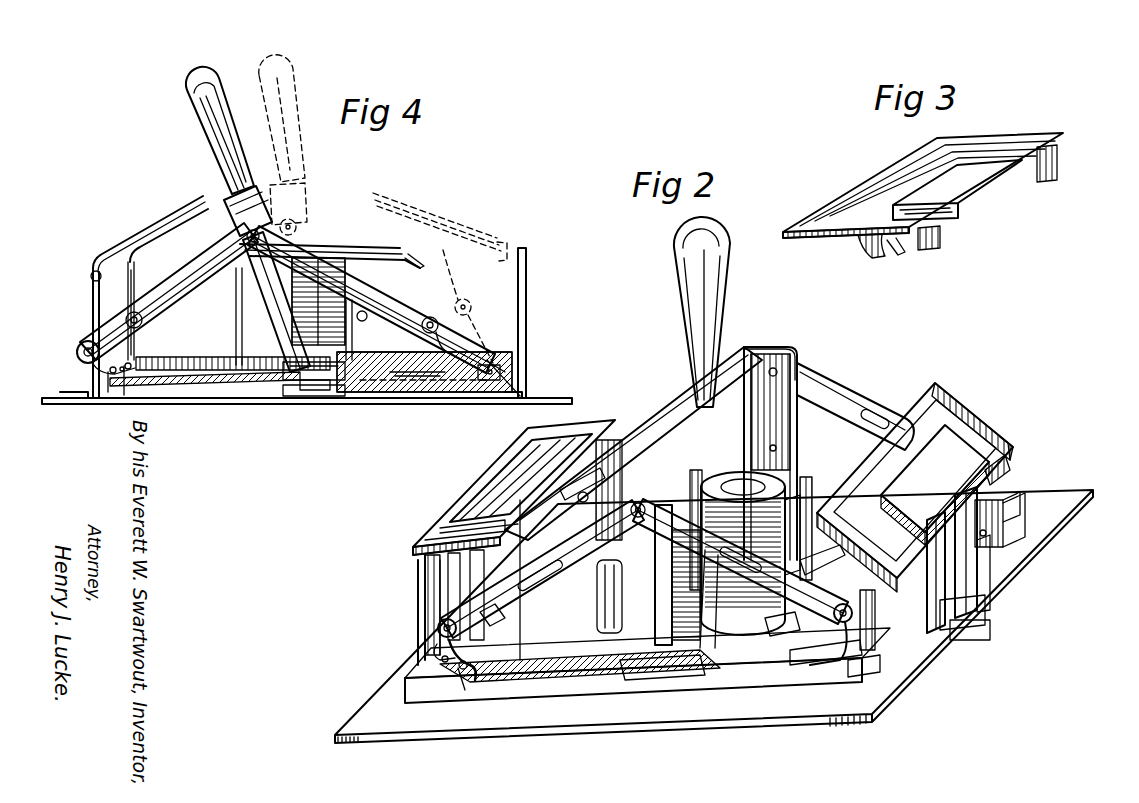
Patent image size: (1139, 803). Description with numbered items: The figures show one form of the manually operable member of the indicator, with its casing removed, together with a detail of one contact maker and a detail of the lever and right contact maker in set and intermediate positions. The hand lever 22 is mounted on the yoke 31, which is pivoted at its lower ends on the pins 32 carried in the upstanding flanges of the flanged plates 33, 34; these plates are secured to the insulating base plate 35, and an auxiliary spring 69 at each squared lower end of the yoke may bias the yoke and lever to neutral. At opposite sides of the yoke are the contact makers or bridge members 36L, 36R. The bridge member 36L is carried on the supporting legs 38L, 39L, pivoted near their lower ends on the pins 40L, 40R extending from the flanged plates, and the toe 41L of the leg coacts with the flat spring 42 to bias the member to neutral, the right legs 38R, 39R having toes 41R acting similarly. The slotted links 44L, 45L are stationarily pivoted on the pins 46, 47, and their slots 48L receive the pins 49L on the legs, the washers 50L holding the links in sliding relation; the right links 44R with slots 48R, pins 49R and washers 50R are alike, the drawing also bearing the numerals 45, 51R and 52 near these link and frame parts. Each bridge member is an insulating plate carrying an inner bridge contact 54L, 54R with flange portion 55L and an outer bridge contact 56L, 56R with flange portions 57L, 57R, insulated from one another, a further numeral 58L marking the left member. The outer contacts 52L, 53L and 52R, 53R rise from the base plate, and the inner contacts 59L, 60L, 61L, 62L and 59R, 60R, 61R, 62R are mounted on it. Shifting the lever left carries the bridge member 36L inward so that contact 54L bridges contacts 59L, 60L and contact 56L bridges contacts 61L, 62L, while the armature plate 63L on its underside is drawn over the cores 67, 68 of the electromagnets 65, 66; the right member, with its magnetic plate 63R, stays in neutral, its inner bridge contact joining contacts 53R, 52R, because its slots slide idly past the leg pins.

In FIG. 4, the hand lever 22 is at (198, 108).
In FIG. 2, the hand lever 22 is at (713, 262).
In FIG. 4, the yoke 31 is at (232, 200).
In FIG. 2, the yoke 31 is at (790, 372).
In FIG. 4, the pins 32 is at (290, 385).
In FIG. 2, the pins 32 is at (600, 684).
In FIG. 4, the flanged plate 33 is at (400, 376).
In FIG. 2, the flanged plate 33 is at (795, 662).
In FIG. 2, the flanged plate 34 is at (1010, 500).
In FIG. 4, the insulating base plate 35 is at (558, 398).
In FIG. 2, the insulating base plate 35 is at (880, 698).
In FIG. 4, the right contact maker or bridge member 36R is at (180, 210).
In FIG. 2, the right contact maker or bridge member 36R is at (440, 520).
In FIG. 4, the left contact maker or bridge member 36L is at (292, 250).
In FIG. 3, the left contact maker or bridge member 36L is at (1062, 138).
In FIG. 2, the left contact maker or bridge member 36L is at (990, 430).
In FIG. 4, the right supporting leg 38R is at (134, 272).
In FIG. 2, the right supporting leg 38R is at (435, 615).
In FIG. 4, the left supporting leg 38L is at (470, 266).
In FIG. 3, the left supporting leg 38L is at (870, 258).
In FIG. 2, the left supporting leg 38L is at (868, 612).
In FIG. 2, the right supporting leg 39R is at (575, 488).
In FIG. 2, the left supporting leg 39L is at (1003, 500).
In FIG. 4, the pin 40R is at (115, 375).
In FIG. 2, the pin 40R is at (560, 566).
In FIG. 4, the pin 40L is at (500, 370).
In FIG. 2, the pin 40L is at (990, 540).
In FIG. 4, the toe 41R is at (148, 372).
In FIG. 2, the toe 41R is at (470, 680).
In FIG. 4, the toe 41L is at (482, 380).
In FIG. 2, the toe 41L is at (850, 680).
In FIG. 4, the flat spring 42 is at (205, 380).
In FIG. 2, the flat spring 42 is at (560, 675).
In FIG. 4, the right slotted link 44R is at (215, 262).
In FIG. 2, the right slotted link 44R is at (590, 580).
In FIG. 4, the left slotted link 44L is at (292, 245).
In FIG. 2, the left slotted link 44L is at (850, 595).
In FIG. 2, the pin 45 is at (778, 375).
In FIG. 2, the left slotted link 45L is at (840, 395).
In FIG. 4, the pin 46 is at (246, 234).
In FIG. 2, the pin 46 is at (640, 502).
In FIG. 2, the pin 47 is at (795, 348).
In FIG. 4, the slot 48R is at (128, 305).
In FIG. 2, the slot 48R is at (520, 600).
In FIG. 4, the slot 48L is at (366, 322).
In FIG. 2, the slot 48L is at (876, 412).
In FIG. 4, the pin 49R is at (105, 360).
In FIG. 2, the pin 49R is at (448, 640).
In FIG. 4, the pin 49L is at (442, 345).
In FIG. 2, the pin 49L is at (840, 660).
In FIG. 4, the washer 50R is at (126, 316).
In FIG. 2, the washer 50R is at (438, 630).
In FIG. 4, the washer 50L is at (430, 334).
In FIG. 2, the washer 50L is at (852, 618).
In FIG. 2, the right pin 51R is at (590, 490).
In FIG. 2, the frame 52 is at (585, 475).
In FIG. 2, the outer contact 52R is at (432, 582).
In FIG. 2, the outer contact 52L is at (990, 565).
In FIG. 4, the outer contact 53R is at (91, 292).
In FIG. 2, the outer contact 53R is at (428, 600).
In FIG. 4, the outer contact 53L is at (527, 296).
In FIG. 2, the outer contact 53L is at (980, 600).
In FIG. 2, the inner bridge contact 54R is at (505, 475).
In FIG. 3, the inner bridge contact 54L is at (1012, 140).
In FIG. 2, the inner bridge contact 54L is at (965, 420).
In FIG. 3, the flange portion 55L is at (975, 205).
In FIG. 2, the flange portion 55L is at (965, 618).
In FIG. 4, the outer bridge contact 56R is at (102, 252).
In FIG. 2, the outer bridge contact 56R is at (420, 545).
In FIG. 4, the outer bridge contact 56L is at (300, 245).
In FIG. 3, the outer bridge contact 56L is at (962, 142).
In FIG. 2, the outer bridge contact 56L is at (935, 390).
In FIG. 4, the flange portion 57R is at (90, 272).
In FIG. 4, the flange portion 57L is at (418, 262).
In FIG. 3, the flange portion 57L is at (940, 240).
In FIG. 2, the flange portion 57L is at (938, 635).
In FIG. 3, the left flange 58L is at (1052, 170).
In FIG. 2, the left flange 58L is at (1005, 455).
In FIG. 2, the inner contact 59R is at (596, 612).
In FIG. 2, the inner contact 59L is at (775, 620).
In FIG. 2, the inner contact 60R is at (697, 470).
In FIG. 2, the inner contact 60L is at (806, 490).
In FIG. 4, the inner contact 61R is at (234, 334).
In FIG. 2, the inner contact 61R is at (600, 620).
In FIG. 4, the inner contact 61L is at (348, 362).
In FIG. 2, the inner contact 61L is at (708, 645).
In FIG. 2, the inner contact 62R is at (712, 450).
In FIG. 2, the inner contact 62L is at (805, 485).
In FIG. 4, the magnetic plate 63R is at (165, 232).
In FIG. 4, the armature plate 63L is at (305, 257).
In FIG. 3, the armature plate 63L is at (899, 252).
In FIG. 4, the electromagnet 65 is at (300, 382).
In FIG. 2, the electromagnet 65 is at (690, 595).
In FIG. 2, the electromagnet 66 is at (808, 565).
In FIG. 4, the core 67 is at (270, 285).
In FIG. 2, the core 67 is at (662, 560).
In FIG. 2, the core 68 is at (780, 446).
In FIG. 4, the auxiliary spring 69 is at (290, 395).
In FIG. 2, the auxiliary spring 69 is at (640, 678).